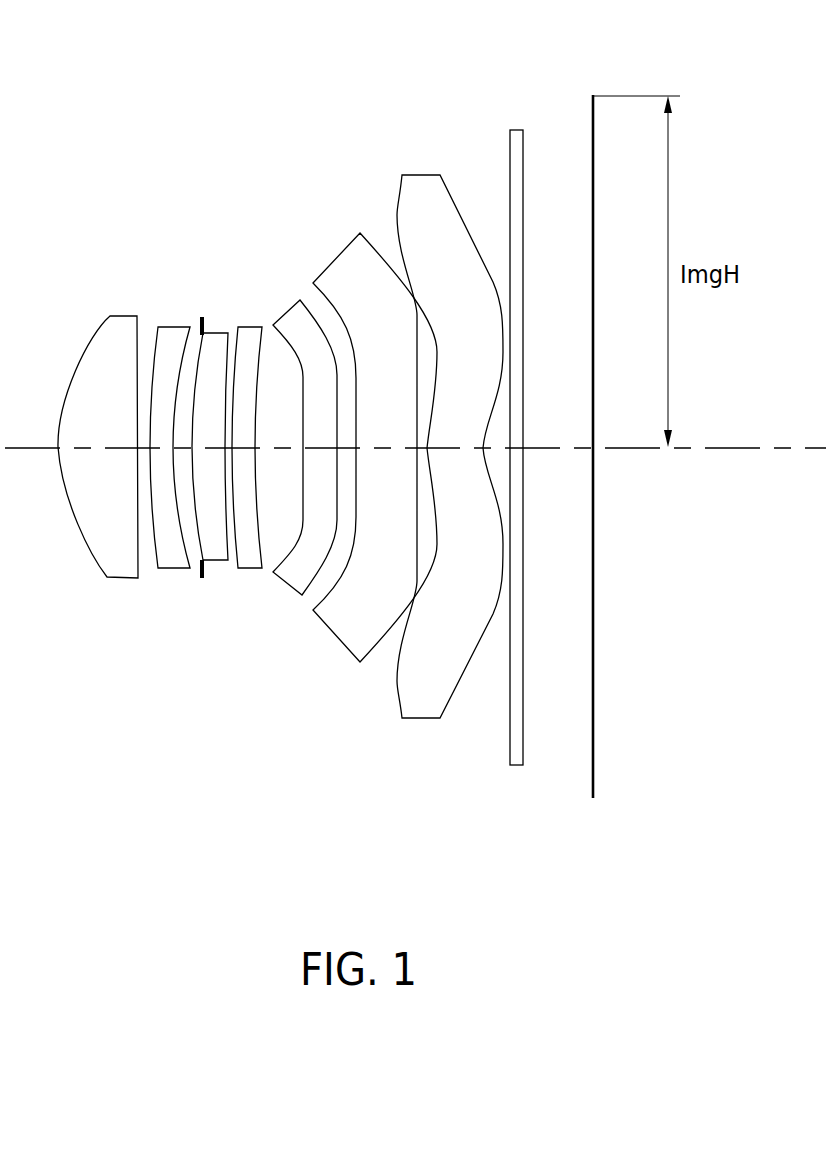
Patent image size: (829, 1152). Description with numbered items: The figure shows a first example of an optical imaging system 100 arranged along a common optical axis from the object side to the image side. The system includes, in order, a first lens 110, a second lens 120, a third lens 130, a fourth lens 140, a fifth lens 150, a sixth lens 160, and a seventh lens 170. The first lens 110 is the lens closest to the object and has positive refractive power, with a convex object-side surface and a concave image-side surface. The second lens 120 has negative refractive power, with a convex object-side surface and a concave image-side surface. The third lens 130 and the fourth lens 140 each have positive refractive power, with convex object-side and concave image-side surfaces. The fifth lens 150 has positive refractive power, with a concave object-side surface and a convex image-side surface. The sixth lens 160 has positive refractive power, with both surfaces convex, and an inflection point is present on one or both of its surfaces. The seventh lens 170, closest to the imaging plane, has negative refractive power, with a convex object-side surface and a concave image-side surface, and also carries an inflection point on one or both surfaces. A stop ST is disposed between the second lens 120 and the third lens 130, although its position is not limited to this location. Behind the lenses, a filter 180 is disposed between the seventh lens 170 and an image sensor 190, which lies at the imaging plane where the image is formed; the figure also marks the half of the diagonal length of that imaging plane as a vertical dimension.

The optical imaging system 100 is at (218, 158).
The first lens 110 is at (117, 570).
The second lens 120 is at (178, 562).
The third lens 130 is at (217, 558).
The fourth lens 140 is at (253, 562).
The fifth lens 150 is at (293, 580).
The sixth lens 160 is at (347, 633).
The seventh lens 170 is at (413, 713).
The filter 180 is at (517, 766).
The image sensor 190 is at (593, 798).
The stop ST is at (201, 317).